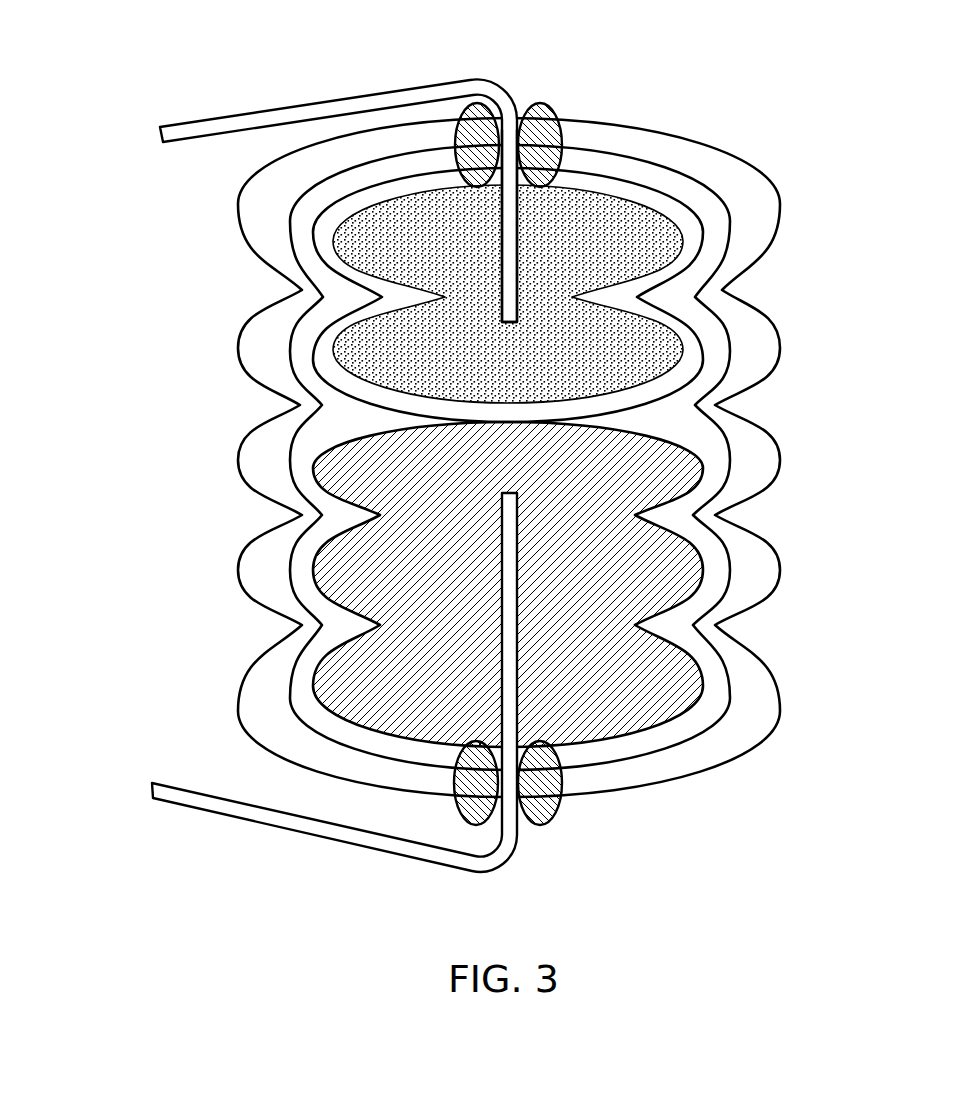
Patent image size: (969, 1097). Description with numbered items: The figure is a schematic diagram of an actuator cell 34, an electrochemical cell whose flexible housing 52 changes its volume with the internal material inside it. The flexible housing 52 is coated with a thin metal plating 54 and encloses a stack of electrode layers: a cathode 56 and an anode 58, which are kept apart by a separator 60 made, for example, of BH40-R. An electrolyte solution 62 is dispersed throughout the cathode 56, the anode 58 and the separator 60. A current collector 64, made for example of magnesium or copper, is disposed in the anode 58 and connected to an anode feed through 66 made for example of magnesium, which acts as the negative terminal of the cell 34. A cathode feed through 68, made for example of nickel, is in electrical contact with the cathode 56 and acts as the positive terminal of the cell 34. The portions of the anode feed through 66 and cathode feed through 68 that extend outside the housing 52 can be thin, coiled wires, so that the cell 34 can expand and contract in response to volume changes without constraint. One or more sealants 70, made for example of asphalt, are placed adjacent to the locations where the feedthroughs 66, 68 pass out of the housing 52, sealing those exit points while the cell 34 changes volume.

The actuator cell 34 is at (142, 32).
The flexible housing 52 is at (300, 345).
The thin metal plating 54 is at (256, 590).
The cathode 56 is at (637, 573).
The anode 58 is at (653, 392).
The separator 60 is at (777, 455).
The electrolyte solution 62 is at (327, 347).
The current collector 64 is at (517, 232).
The anode feed through 66 is at (500, 92).
The cathode feed through 68 is at (152, 788).
The sealant 70 is at (565, 120).